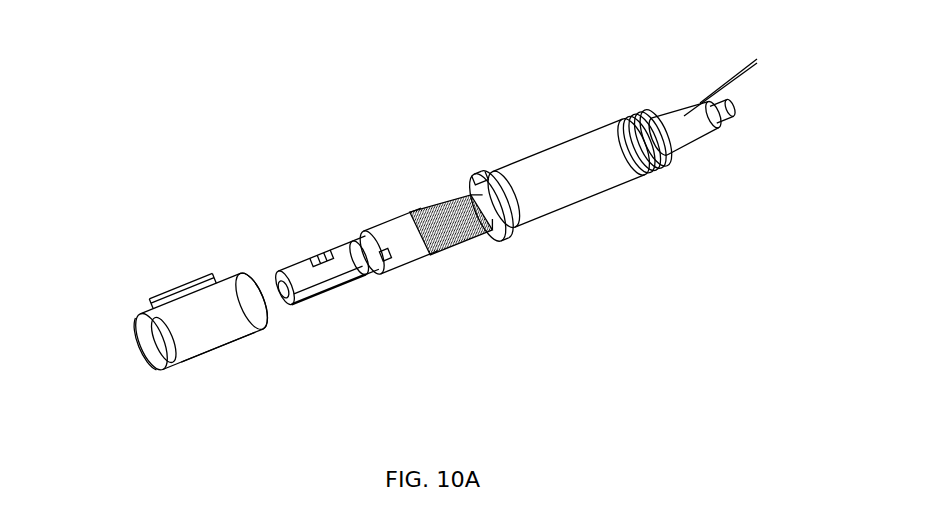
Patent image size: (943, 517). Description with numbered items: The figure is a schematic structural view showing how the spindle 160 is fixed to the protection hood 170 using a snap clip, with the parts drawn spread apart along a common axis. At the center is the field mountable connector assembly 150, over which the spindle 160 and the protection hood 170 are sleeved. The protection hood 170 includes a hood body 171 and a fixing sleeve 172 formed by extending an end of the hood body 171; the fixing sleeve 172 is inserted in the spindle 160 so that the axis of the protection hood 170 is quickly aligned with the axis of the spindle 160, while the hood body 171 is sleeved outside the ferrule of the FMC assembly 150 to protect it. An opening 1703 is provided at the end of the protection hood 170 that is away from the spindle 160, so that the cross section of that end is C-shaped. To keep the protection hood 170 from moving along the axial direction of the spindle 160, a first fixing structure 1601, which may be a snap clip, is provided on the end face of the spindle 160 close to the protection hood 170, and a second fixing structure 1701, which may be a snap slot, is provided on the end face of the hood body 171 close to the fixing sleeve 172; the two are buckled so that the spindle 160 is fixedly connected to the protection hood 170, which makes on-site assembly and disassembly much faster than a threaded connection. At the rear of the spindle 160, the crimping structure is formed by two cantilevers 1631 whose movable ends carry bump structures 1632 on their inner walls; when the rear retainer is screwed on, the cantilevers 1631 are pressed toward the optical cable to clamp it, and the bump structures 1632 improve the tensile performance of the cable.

The field mountable connector (FMC) assembly 150 is at (402, 222).
The spindle 160 is at (552, 173).
The first fixing structure 1601 is at (485, 173).
The cantilevers 1631 is at (714, 115).
The bump structures 1632 is at (684, 113).
The protection hood 170 is at (173, 330).
The second fixing structure 1701 is at (220, 283).
The opening 1703 is at (158, 315).
The hood body 171 is at (198, 350).
The fixing sleeve 172 is at (252, 320).